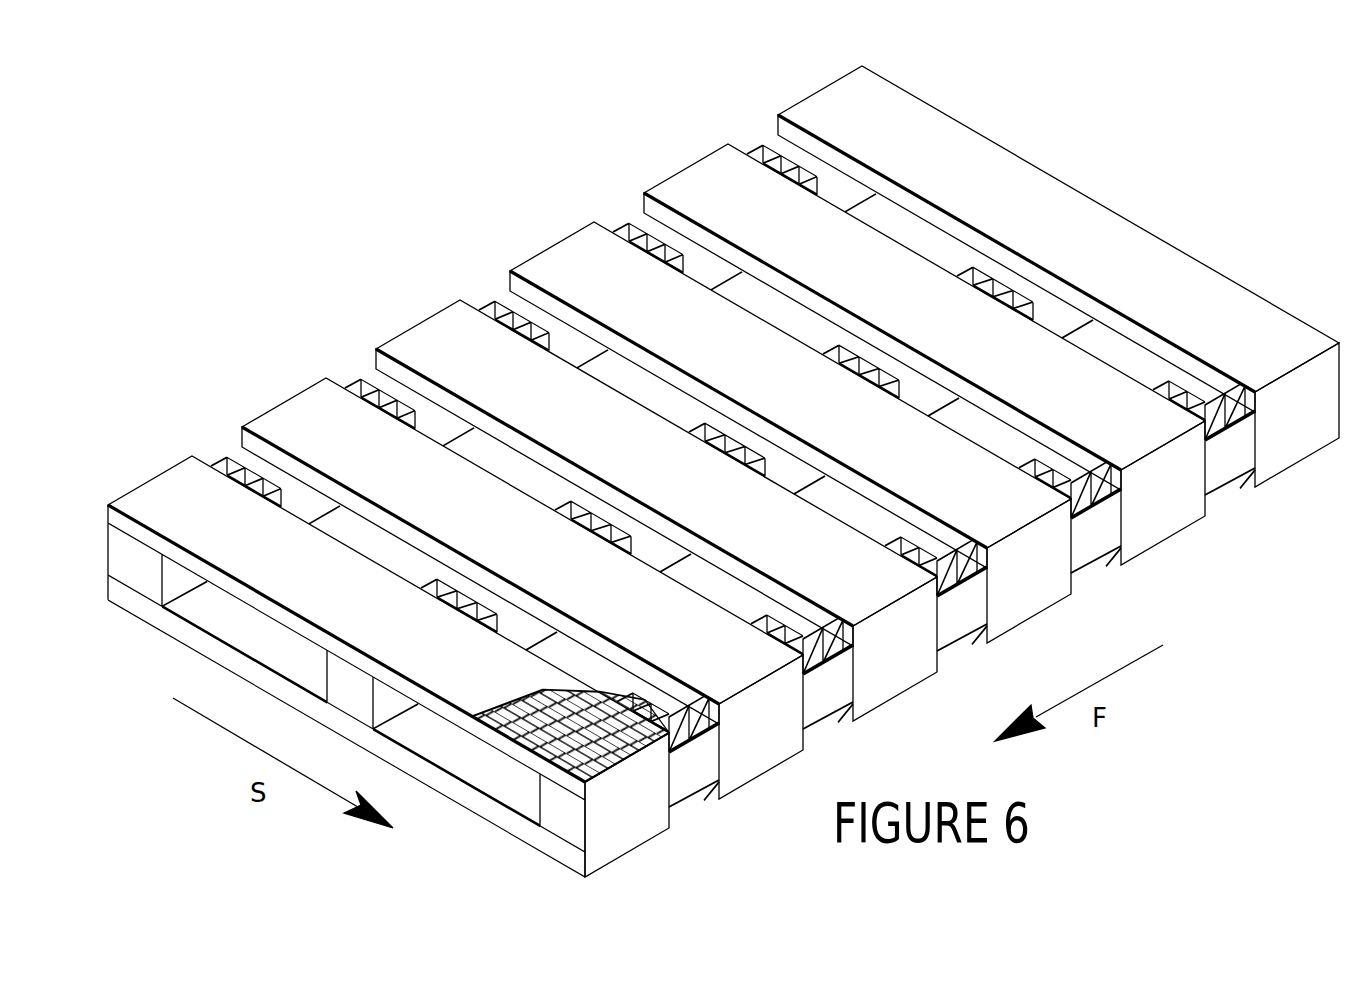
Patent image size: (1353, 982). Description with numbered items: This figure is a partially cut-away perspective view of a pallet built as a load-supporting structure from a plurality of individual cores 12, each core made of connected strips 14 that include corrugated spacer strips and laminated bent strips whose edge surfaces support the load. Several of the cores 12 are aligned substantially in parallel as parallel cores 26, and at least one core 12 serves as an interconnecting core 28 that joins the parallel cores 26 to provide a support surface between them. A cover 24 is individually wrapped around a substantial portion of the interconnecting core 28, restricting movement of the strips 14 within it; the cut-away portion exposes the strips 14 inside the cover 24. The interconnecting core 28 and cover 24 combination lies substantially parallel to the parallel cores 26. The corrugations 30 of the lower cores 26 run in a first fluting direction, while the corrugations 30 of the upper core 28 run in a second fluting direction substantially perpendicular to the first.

The core 12 is at (823, 87).
The connected strips 14 is at (500, 302).
The cover 24 is at (470, 682).
The parallel cores 26 is at (150, 578).
The interconnecting core 28 is at (500, 740).
The corrugations 30 is at (605, 777).